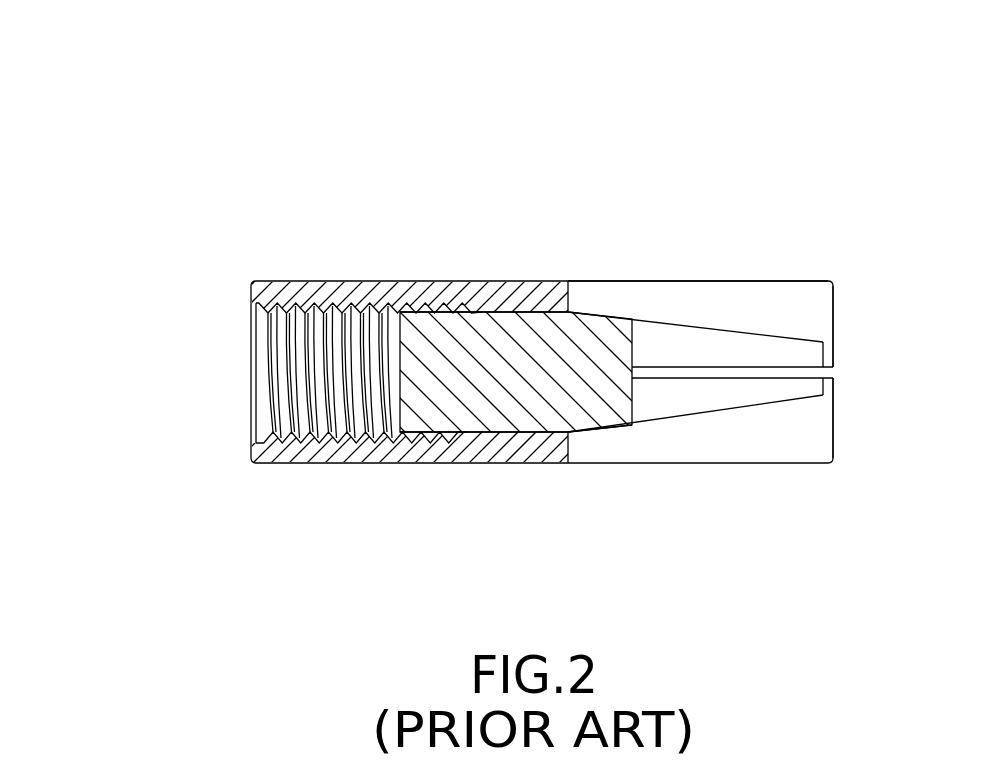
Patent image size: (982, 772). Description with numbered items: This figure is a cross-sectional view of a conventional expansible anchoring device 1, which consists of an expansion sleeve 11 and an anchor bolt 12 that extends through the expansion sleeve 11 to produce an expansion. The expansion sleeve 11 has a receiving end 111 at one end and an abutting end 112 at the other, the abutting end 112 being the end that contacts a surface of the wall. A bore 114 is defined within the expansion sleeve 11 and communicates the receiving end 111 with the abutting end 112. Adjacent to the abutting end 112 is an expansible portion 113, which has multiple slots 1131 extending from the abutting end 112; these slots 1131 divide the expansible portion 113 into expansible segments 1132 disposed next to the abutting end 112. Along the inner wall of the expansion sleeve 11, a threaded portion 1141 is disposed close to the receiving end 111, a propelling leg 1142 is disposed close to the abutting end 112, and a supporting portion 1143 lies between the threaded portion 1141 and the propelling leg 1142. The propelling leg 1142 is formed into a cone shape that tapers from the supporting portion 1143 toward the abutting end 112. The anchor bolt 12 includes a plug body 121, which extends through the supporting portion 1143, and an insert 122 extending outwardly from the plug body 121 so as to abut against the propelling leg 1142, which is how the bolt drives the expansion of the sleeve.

The expansible anchoring device 1 is at (110, 165).
The expansion sleeve 11 is at (266, 248).
The receiving end 111 is at (252, 332).
The abutting end 112 is at (834, 305).
The expansible portion 113 is at (712, 472).
The slot 1131 is at (772, 372).
The expansible segment 1132 is at (762, 293).
The bore 114 is at (246, 392).
The threaded portion 1141 is at (343, 323).
The propelling leg 1142 is at (661, 343).
The supporting portion 1143 is at (517, 313).
The anchor bolt 12 is at (642, 406).
The plug body 121 is at (427, 422).
The insert 122 is at (600, 432).